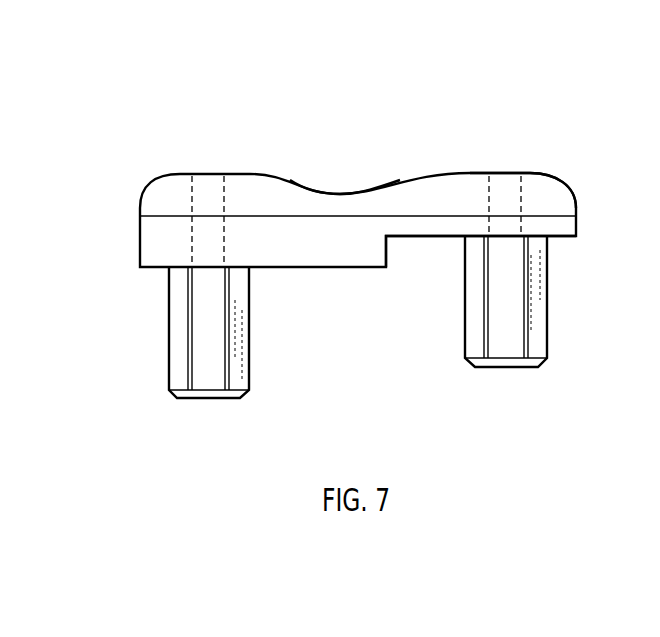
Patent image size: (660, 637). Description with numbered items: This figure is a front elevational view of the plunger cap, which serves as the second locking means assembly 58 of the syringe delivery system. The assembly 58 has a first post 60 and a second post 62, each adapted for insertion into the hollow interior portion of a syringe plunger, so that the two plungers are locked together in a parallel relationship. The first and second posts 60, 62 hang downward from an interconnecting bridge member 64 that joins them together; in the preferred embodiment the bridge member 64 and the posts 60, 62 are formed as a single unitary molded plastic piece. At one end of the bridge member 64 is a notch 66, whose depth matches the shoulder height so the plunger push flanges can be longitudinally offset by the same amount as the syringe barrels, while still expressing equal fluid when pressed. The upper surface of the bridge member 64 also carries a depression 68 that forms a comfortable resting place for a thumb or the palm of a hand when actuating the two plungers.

The second locking means assembly 58 is at (334, 156).
The first post 60 is at (176, 370).
The second post 62 is at (530, 303).
The interconnecting bridge member 64 is at (543, 185).
The notch 66 is at (427, 238).
The depression 68 is at (344, 195).